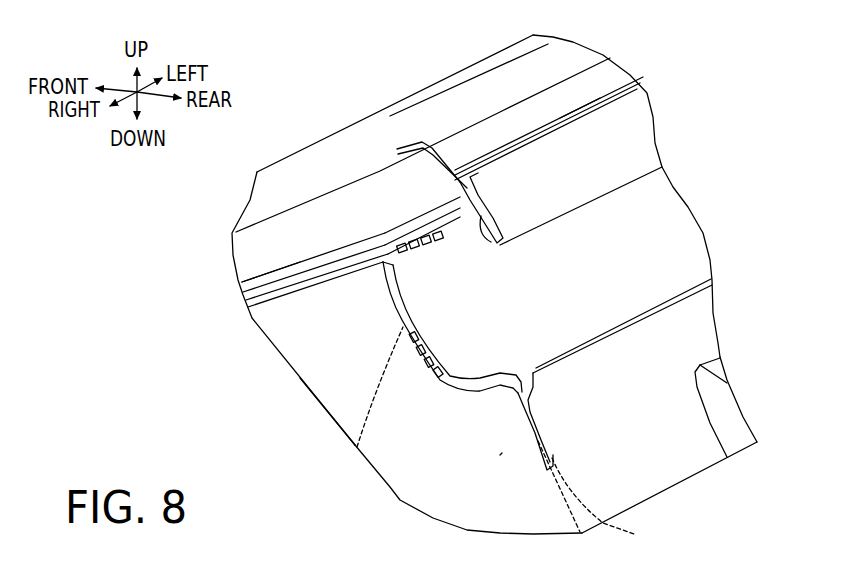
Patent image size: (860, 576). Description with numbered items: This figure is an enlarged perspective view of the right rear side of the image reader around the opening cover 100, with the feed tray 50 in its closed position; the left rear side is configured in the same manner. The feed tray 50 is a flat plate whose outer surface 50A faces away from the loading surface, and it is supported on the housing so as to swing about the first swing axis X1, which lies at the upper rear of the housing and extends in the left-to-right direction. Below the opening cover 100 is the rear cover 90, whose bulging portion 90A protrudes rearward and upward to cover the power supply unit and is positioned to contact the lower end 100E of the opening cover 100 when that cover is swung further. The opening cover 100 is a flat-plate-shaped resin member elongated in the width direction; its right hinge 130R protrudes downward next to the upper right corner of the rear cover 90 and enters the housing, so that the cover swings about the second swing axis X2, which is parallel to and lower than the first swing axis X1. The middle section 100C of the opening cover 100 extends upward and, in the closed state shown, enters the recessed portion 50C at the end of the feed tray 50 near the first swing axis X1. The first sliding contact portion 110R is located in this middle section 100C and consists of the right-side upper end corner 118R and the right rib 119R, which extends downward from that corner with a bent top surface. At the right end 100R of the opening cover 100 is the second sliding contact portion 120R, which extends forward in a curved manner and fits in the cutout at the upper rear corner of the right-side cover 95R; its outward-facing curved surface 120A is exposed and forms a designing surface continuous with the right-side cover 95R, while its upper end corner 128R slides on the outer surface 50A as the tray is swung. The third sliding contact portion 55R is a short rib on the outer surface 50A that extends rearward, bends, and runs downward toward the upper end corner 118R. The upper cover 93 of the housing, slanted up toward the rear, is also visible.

The feed tray 50 is at (307, 146).
The outer surface 50A is at (567, 58).
The recessed portion 50C is at (610, 100).
The third sliding contact portion 55R is at (447, 172).
The upper cover 93 is at (262, 282).
The opening cover 100 is at (692, 213).
The middle section 100C is at (568, 110).
The lower end 100E is at (677, 303).
The right end 100R is at (365, 440).
The first sliding contact portion 110R is at (487, 208).
The right-side upper end corner 118R is at (447, 180).
The right rib 119R is at (487, 228).
The curved surface 120A is at (480, 337).
The second sliding contact portion 120R is at (437, 278).
The upper end corner 128R is at (385, 234).
The right hinge 130R is at (587, 510).
The rear cover 90 is at (677, 463).
The bulging portion 90A is at (735, 423).
The right-side cover 95R is at (400, 478).
The first swing axis X1 is at (382, 291).
The second swing axis X2 is at (500, 455).